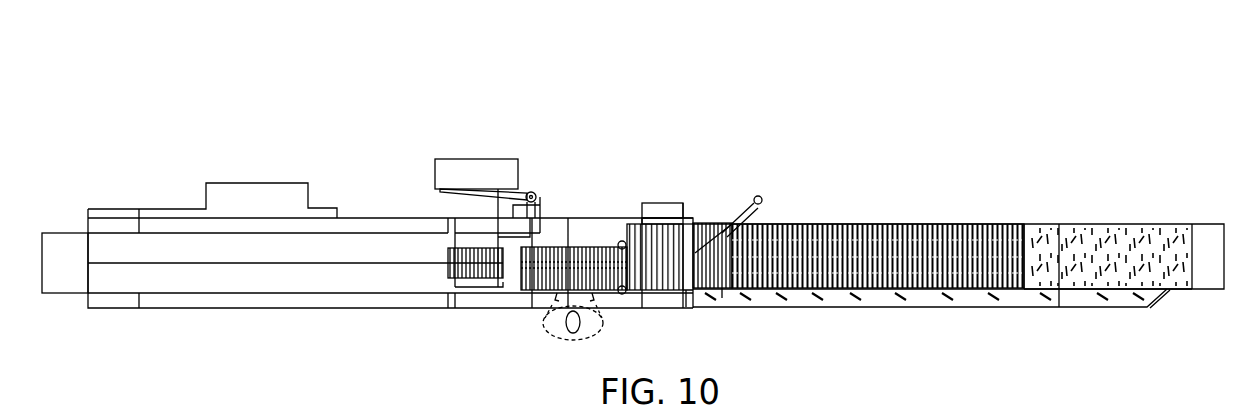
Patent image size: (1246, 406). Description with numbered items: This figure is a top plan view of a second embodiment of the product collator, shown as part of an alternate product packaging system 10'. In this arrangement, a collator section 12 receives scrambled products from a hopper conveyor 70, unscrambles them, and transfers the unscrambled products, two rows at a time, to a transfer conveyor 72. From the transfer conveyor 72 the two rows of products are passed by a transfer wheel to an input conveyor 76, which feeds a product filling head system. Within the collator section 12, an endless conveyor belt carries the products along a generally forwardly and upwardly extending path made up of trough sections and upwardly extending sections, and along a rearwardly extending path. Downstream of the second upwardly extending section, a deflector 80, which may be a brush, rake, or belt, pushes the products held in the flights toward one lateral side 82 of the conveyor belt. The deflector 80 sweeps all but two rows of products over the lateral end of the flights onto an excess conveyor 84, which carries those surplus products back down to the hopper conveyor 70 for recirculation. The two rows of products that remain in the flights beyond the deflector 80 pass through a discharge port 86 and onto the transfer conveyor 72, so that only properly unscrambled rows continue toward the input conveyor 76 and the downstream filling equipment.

The product packaging system 10' is at (388, 159).
The collator section 12 is at (898, 182).
The hopper conveyor 70 is at (1130, 224).
The transfer conveyor 72 is at (653, 222).
The input conveyor 76 is at (583, 247).
The deflector 80 is at (733, 213).
The lateral side of the conveyor belt 82 is at (797, 292).
The excess conveyor 84 is at (970, 303).
The discharge port 86 is at (690, 305).